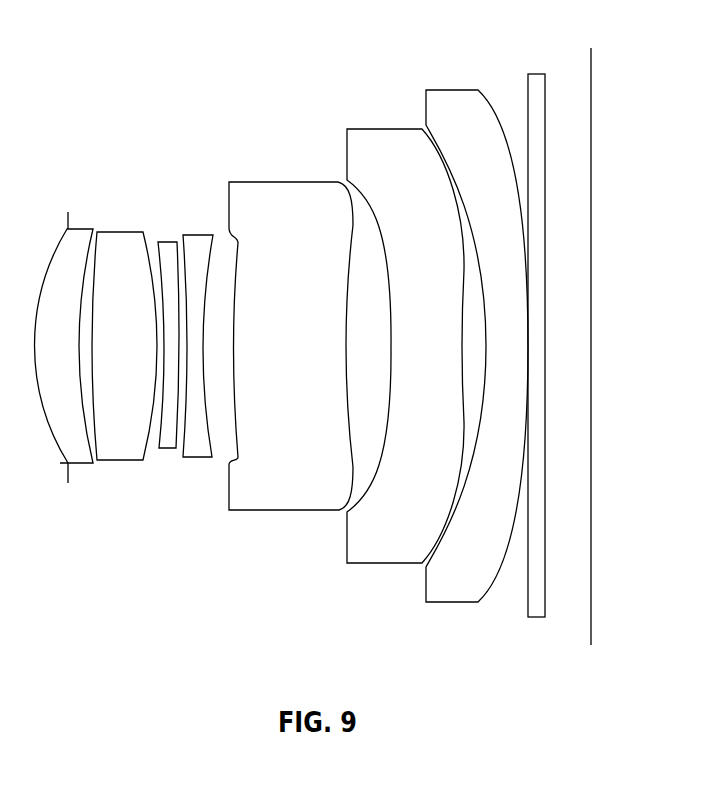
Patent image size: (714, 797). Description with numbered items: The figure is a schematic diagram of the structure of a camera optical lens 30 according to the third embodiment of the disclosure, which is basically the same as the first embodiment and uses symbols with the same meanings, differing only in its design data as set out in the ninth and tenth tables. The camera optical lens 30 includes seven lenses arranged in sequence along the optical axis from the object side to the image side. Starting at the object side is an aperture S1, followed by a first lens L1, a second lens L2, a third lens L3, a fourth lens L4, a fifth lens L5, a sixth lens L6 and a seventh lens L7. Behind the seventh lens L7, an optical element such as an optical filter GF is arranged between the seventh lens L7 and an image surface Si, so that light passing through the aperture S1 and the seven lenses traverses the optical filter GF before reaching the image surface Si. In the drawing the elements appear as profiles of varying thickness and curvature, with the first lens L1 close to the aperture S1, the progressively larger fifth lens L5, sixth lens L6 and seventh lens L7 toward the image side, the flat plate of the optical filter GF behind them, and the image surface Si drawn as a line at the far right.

The camera optical lens 30 is at (303, 40).
The aperture S1 is at (58, 345).
The first lens L1 is at (68, 335).
The second lens L2 is at (124, 334).
The third lens L3 is at (171, 333).
The fourth lens L4 is at (198, 335).
The fifth lens L5 is at (291, 334).
The sixth lens L6 is at (405, 334).
The seventh lens L7 is at (477, 334).
The optical filter GF is at (540, 335).
The image surface Si is at (594, 336).